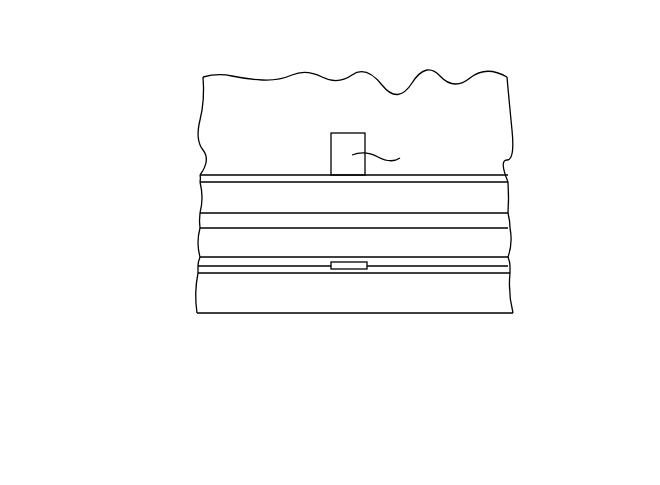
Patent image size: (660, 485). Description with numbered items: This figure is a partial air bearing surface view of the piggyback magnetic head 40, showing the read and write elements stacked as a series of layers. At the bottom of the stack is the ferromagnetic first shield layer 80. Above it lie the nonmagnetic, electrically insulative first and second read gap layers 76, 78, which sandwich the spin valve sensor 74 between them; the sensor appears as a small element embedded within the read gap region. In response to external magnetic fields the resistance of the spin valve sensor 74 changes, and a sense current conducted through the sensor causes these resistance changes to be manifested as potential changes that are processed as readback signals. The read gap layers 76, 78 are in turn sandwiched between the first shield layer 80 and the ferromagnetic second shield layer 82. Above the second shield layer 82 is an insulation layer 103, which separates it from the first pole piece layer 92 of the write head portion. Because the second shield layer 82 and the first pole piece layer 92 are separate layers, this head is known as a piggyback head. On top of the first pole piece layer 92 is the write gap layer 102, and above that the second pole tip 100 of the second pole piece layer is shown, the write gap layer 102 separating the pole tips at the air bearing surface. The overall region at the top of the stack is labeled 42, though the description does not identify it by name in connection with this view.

The piggyback magnetic head 40 is at (527, 92).
The top layer 42 is at (208, 103).
The second pole tip 100 is at (345, 140).
The write gap layer 102 is at (270, 175).
The first pole piece layer 92 is at (210, 195).
The insulation layer 103 is at (500, 222).
The second shield layer 82 is at (205, 243).
The second read gap layer 78 is at (470, 260).
The first read gap layer 76 is at (258, 273).
The spin valve sensor 74 is at (345, 268).
The first shield layer 80 is at (500, 297).